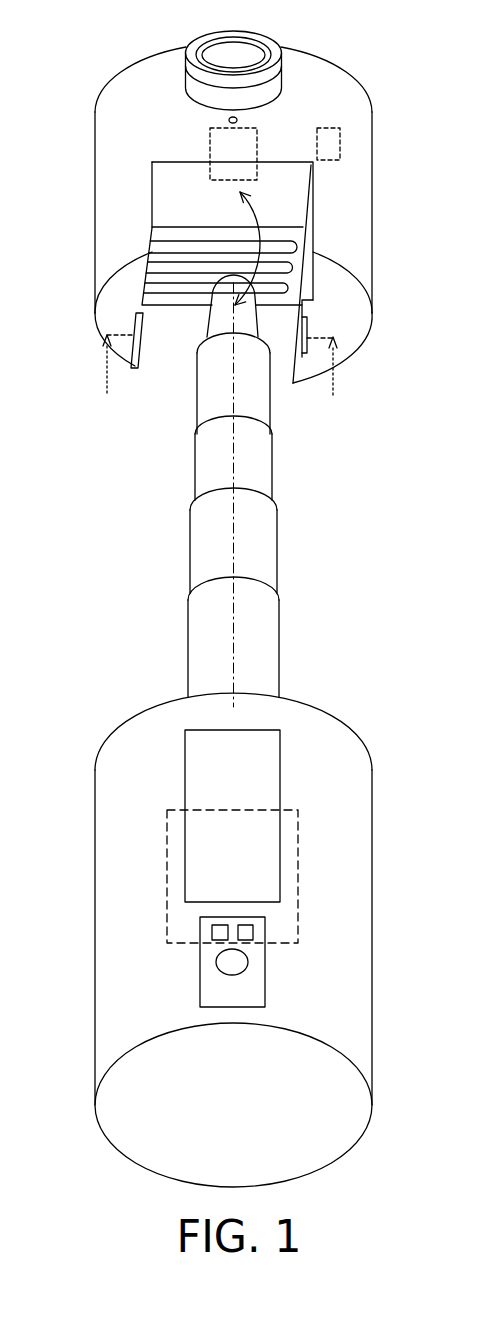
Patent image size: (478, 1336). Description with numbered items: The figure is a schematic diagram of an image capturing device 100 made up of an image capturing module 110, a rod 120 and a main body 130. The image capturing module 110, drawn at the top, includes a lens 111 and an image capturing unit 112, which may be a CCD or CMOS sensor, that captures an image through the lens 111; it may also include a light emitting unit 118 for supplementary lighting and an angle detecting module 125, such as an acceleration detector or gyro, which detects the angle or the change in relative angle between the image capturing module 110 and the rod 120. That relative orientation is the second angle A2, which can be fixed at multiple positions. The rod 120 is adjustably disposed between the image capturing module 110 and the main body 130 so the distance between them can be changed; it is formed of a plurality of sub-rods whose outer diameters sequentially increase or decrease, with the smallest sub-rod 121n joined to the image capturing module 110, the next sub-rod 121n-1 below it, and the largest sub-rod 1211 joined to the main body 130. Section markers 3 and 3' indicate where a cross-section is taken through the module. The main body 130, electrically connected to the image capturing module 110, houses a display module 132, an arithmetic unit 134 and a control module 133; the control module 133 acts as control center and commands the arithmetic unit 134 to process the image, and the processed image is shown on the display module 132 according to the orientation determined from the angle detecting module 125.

The image capturing device 100 is at (373, 43).
The image capturing module 110 is at (372, 220).
The lens 111 is at (235, 60).
The light emitting unit 118 is at (229, 120).
The image capturing unit 112 is at (220, 147).
The angle detecting module 125 is at (340, 142).
The second angle A2 is at (261, 248).
The sub-rod 121n is at (217, 317).
The sub-rod 121n-1 is at (212, 390).
The section line 3 is at (117, 379).
The section line 3' is at (326, 380).
The rod 120 is at (279, 553).
The sub-rod 1211 is at (253, 647).
The main body 130 is at (372, 885).
The display module 132 is at (280, 775).
The arithmetic unit 134 is at (167, 883).
The control module 133 is at (253, 982).